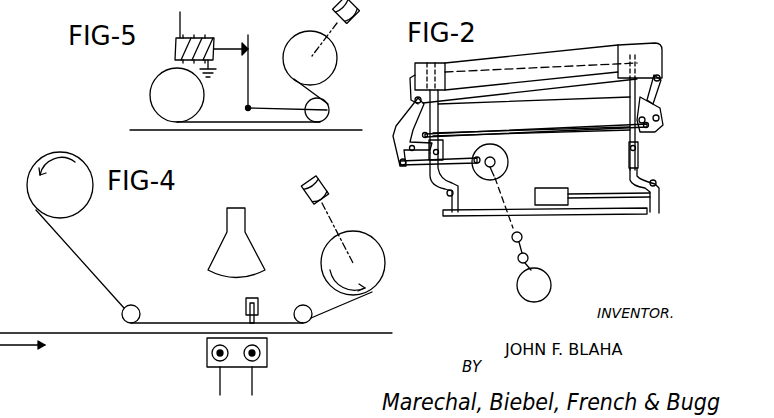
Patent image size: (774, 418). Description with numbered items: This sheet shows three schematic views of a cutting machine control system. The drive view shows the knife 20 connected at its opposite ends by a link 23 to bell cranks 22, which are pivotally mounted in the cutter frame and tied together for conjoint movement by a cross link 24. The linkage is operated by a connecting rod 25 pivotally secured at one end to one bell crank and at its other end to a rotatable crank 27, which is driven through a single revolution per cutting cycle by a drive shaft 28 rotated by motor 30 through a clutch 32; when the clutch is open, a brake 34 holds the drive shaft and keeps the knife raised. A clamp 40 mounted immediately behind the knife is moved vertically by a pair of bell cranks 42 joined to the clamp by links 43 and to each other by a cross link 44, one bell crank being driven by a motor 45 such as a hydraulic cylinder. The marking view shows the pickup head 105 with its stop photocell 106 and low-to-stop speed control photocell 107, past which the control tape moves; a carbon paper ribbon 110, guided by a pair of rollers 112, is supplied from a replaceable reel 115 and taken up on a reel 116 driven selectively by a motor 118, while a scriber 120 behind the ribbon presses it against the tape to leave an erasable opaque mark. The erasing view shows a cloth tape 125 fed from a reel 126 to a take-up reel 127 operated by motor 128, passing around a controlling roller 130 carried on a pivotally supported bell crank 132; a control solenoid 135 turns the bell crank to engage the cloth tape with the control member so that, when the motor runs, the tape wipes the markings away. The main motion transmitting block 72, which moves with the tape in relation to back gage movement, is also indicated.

In FIG. 2, the knife 20 is at (500, 87).
In FIG. 2, the bell cranks 22 is at (396, 148).
In FIG. 2, the link 23 is at (414, 104).
In FIG. 2, the cross link 24 is at (549, 131).
In FIG. 2, the connecting rod 25 is at (414, 167).
In FIG. 2, the crank 27 is at (509, 167).
In FIG. 2, the drive shaft 28 is at (503, 198).
In FIG. 2, the motor 30 is at (549, 272).
In FIG. 2, the clutch 32 is at (519, 262).
In FIG. 2, the brake 34 is at (523, 236).
In FIG. 2, the clamp 40 is at (568, 92).
In FIG. 2, the bell cranks 42 is at (440, 216).
In FIG. 2, the links 43 is at (438, 155).
In FIG. 2, the cross link 44 is at (613, 217).
In FIG. 2, the motor 45 is at (560, 186).
In FIG. 5, the main motion transmitting block 72 is at (283, 13).
In FIG. 4, the pickup head 105 is at (266, 376).
In FIG. 4, the stop photocell 106 is at (261, 356).
In FIG. 4, the low-to-stop speed control photocell 107 is at (211, 356).
In FIG. 4, the ribbon 110 is at (170, 322).
In FIG. 4, the rollers 112 is at (130, 305).
In FIG. 4, the reel 115 is at (73, 202).
In FIG. 4, the reel 116 is at (378, 274).
In FIG. 4, the motor 118 is at (305, 196).
In FIG. 4, the scriber 120 is at (267, 306).
In FIG. 5, the cloth tape 125 is at (221, 122).
In FIG. 5, the reel 126 is at (152, 95).
In FIG. 5, the reel 127 is at (334, 58).
In FIG. 5, the motor 128 is at (357, 15).
In FIG. 5, the controlling roller 130 is at (327, 105).
In FIG. 5, the bell crank 132 is at (280, 107).
In FIG. 5, the control solenoid 135 is at (221, 38).